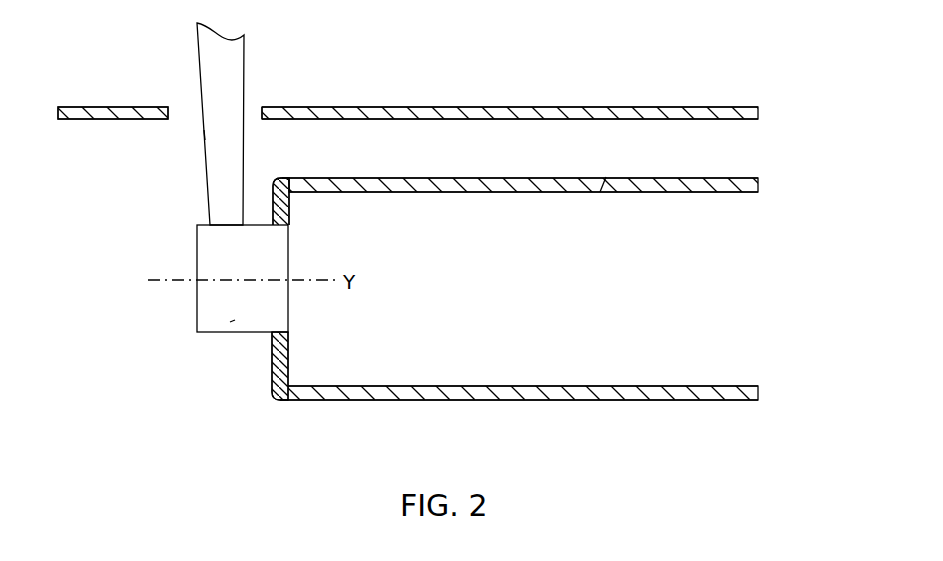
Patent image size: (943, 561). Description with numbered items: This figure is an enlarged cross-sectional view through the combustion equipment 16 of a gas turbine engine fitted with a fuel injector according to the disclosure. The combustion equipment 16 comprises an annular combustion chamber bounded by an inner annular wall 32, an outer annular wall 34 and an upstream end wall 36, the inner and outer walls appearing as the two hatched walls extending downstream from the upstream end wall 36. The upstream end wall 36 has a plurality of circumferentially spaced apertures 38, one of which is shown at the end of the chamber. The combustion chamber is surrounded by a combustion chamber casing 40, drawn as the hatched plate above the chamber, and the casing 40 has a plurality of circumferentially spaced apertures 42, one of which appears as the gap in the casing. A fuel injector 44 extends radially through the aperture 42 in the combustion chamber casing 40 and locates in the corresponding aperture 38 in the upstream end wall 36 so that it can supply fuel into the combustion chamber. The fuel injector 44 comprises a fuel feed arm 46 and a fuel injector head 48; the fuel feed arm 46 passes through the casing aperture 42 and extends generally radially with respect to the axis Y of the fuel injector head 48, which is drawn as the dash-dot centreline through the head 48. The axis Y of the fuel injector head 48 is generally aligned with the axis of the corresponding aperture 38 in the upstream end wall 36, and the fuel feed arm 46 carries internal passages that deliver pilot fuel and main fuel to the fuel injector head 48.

The combustion equipment 16 is at (606, 178).
The inner annular wall 32 is at (590, 400).
The outer annular wall 34 is at (676, 178).
The upstream end wall 36 is at (273, 210).
The aperture 38 is at (280, 332).
The combustion chamber casing 40 is at (718, 107).
The aperture 42 is at (262, 110).
The fuel injector 44 is at (197, 250).
The fuel feed arm 46 is at (210, 133).
The fuel injector head 48 is at (235, 320).